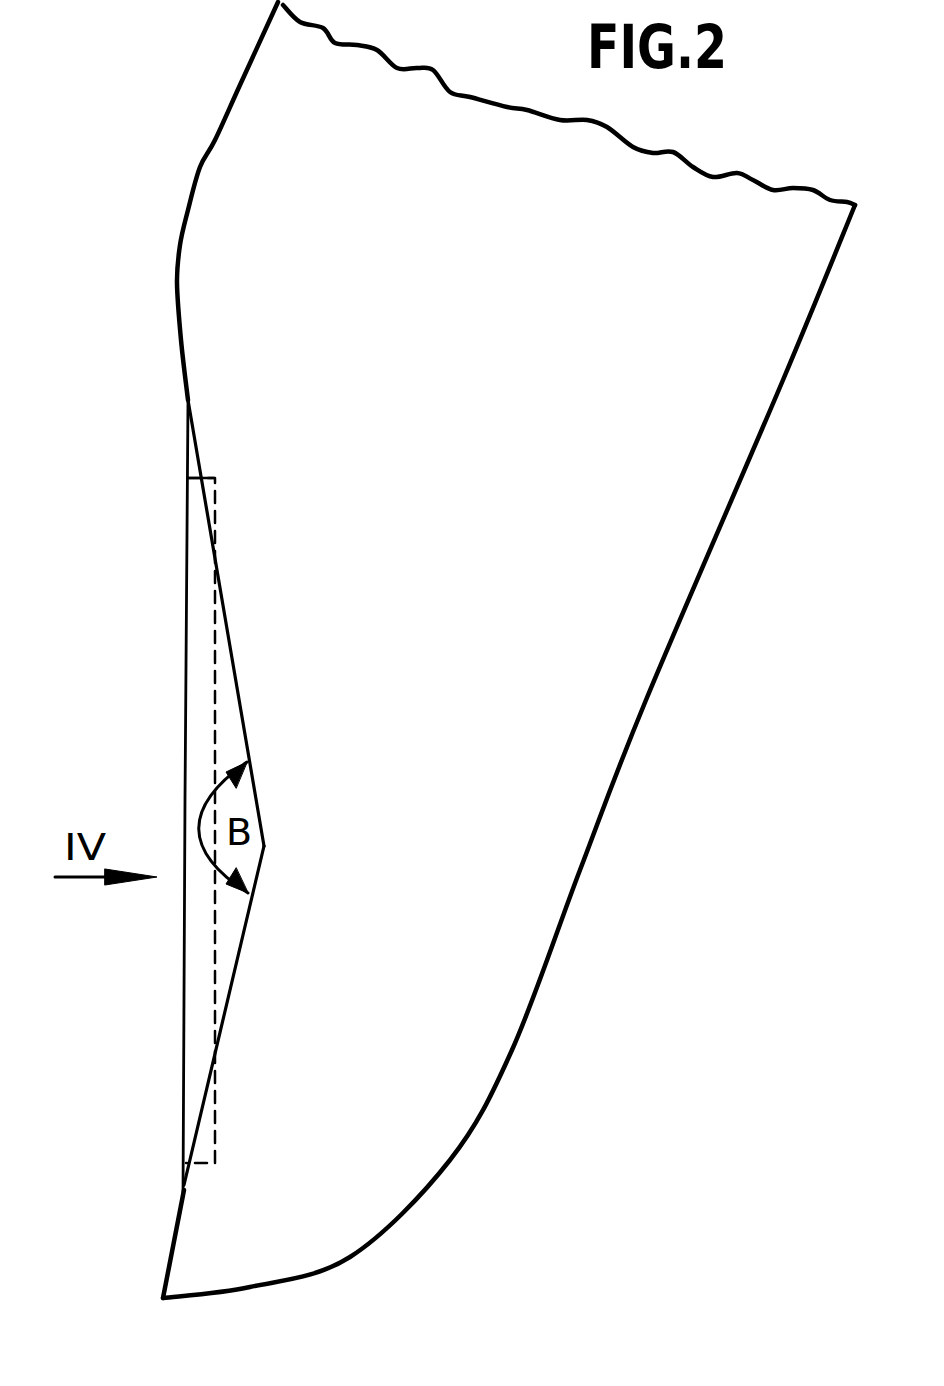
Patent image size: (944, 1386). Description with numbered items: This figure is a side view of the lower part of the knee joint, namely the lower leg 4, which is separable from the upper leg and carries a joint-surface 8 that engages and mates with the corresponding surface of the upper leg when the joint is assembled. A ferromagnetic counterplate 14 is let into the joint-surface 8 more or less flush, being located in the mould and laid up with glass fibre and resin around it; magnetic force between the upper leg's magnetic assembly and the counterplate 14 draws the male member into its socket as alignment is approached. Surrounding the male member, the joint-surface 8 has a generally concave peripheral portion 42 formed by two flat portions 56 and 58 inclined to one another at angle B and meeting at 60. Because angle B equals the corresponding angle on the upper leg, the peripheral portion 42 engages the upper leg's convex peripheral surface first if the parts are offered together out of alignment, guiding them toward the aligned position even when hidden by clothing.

The lower leg 4 is at (478, 995).
The joint-surface 8 is at (150, 713).
The ferromagnetic counterplate 14 is at (205, 928).
The peripheral portion 42 is at (217, 572).
The flat portion 56 is at (228, 643).
The flat portion 58 is at (217, 1040).
The meeting point of flat portions 60 is at (350, 750).